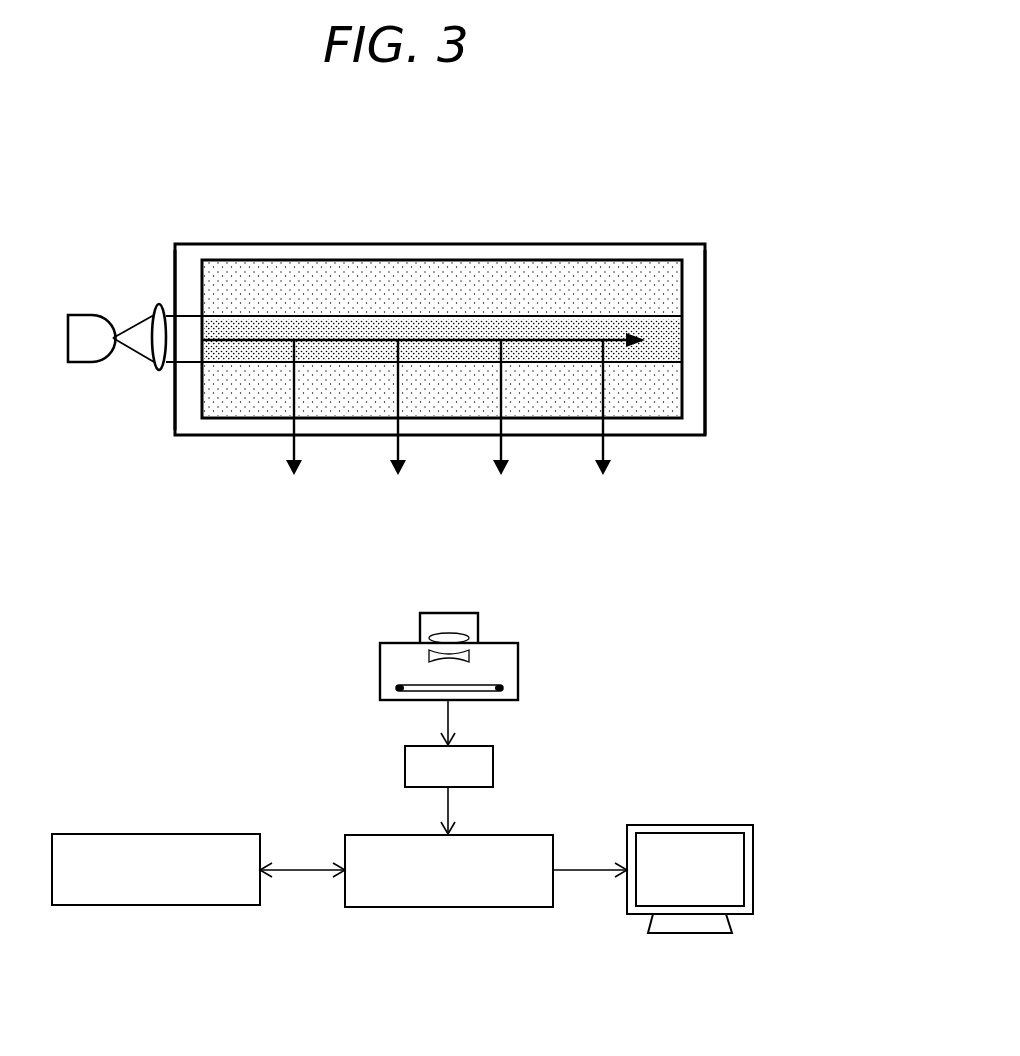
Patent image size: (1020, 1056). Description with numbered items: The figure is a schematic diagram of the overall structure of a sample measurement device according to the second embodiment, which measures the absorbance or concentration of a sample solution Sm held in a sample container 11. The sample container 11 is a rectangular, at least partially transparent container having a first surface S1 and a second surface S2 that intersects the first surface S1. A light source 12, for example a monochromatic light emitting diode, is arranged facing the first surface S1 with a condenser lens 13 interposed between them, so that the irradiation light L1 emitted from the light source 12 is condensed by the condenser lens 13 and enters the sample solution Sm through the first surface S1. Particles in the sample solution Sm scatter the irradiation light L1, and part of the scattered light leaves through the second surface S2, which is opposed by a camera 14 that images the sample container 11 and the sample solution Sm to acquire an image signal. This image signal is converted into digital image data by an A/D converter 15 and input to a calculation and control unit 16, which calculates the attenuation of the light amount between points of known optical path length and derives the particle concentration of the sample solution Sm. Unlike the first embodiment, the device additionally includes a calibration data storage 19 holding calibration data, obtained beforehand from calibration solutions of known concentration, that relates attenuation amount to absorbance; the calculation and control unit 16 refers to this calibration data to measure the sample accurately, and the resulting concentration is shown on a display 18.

The sample container 11 is at (530, 250).
The sample solution Sm is at (463, 268).
The irradiation light L1 is at (652, 318).
The first surface S1 is at (175, 270).
The second surface S2 is at (680, 437).
The light source 12 is at (82, 358).
The condenser lens 13 is at (152, 378).
The camera 14 is at (518, 670).
The A/D converter 15 is at (493, 768).
The calculation and control unit 16 is at (540, 834).
The display 18 is at (753, 845).
The calibration data storage 19 is at (235, 834).